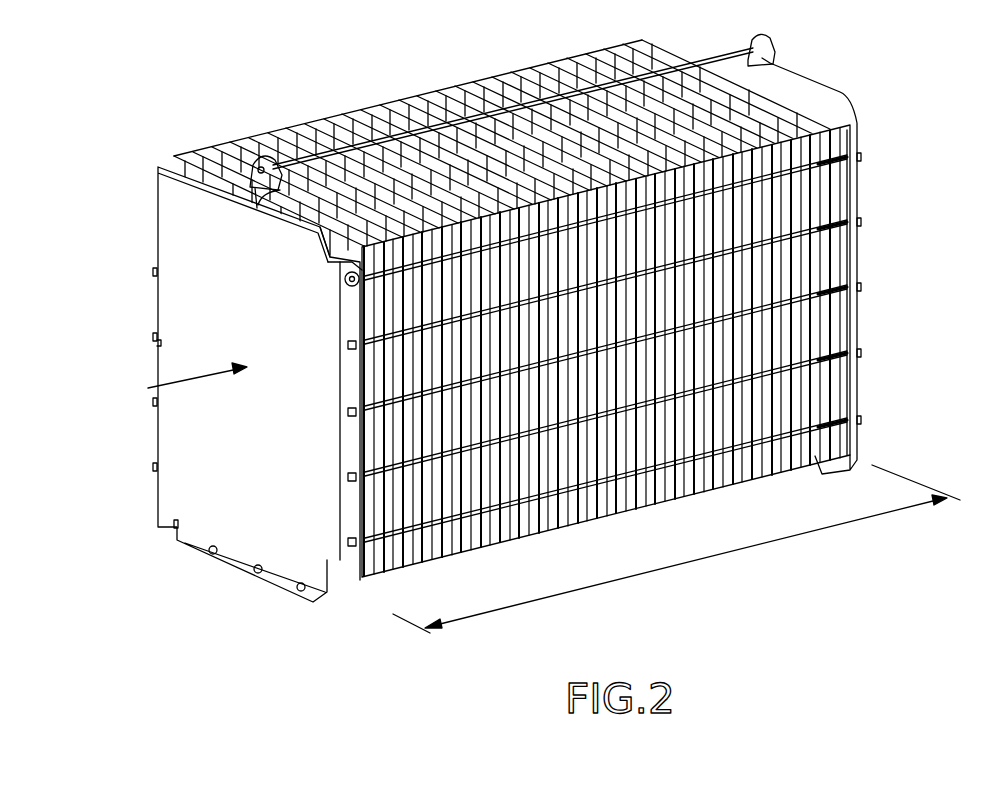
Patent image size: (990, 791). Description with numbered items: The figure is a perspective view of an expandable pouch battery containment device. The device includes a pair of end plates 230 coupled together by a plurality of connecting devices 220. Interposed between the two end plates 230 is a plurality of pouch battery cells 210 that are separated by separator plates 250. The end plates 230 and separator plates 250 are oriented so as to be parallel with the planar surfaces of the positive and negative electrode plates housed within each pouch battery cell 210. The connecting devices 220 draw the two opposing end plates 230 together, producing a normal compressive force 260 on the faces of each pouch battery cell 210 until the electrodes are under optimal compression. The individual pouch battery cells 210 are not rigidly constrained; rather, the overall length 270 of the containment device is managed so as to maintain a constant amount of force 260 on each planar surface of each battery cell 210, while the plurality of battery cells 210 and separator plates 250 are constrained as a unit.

The pouch battery cell 210 is at (544, 512).
The connecting device 220 is at (440, 455).
The end plate 230 is at (262, 449).
The separator plate 250 is at (823, 108).
The constant force 260 is at (200, 375).
The overall length 270 is at (676, 549).